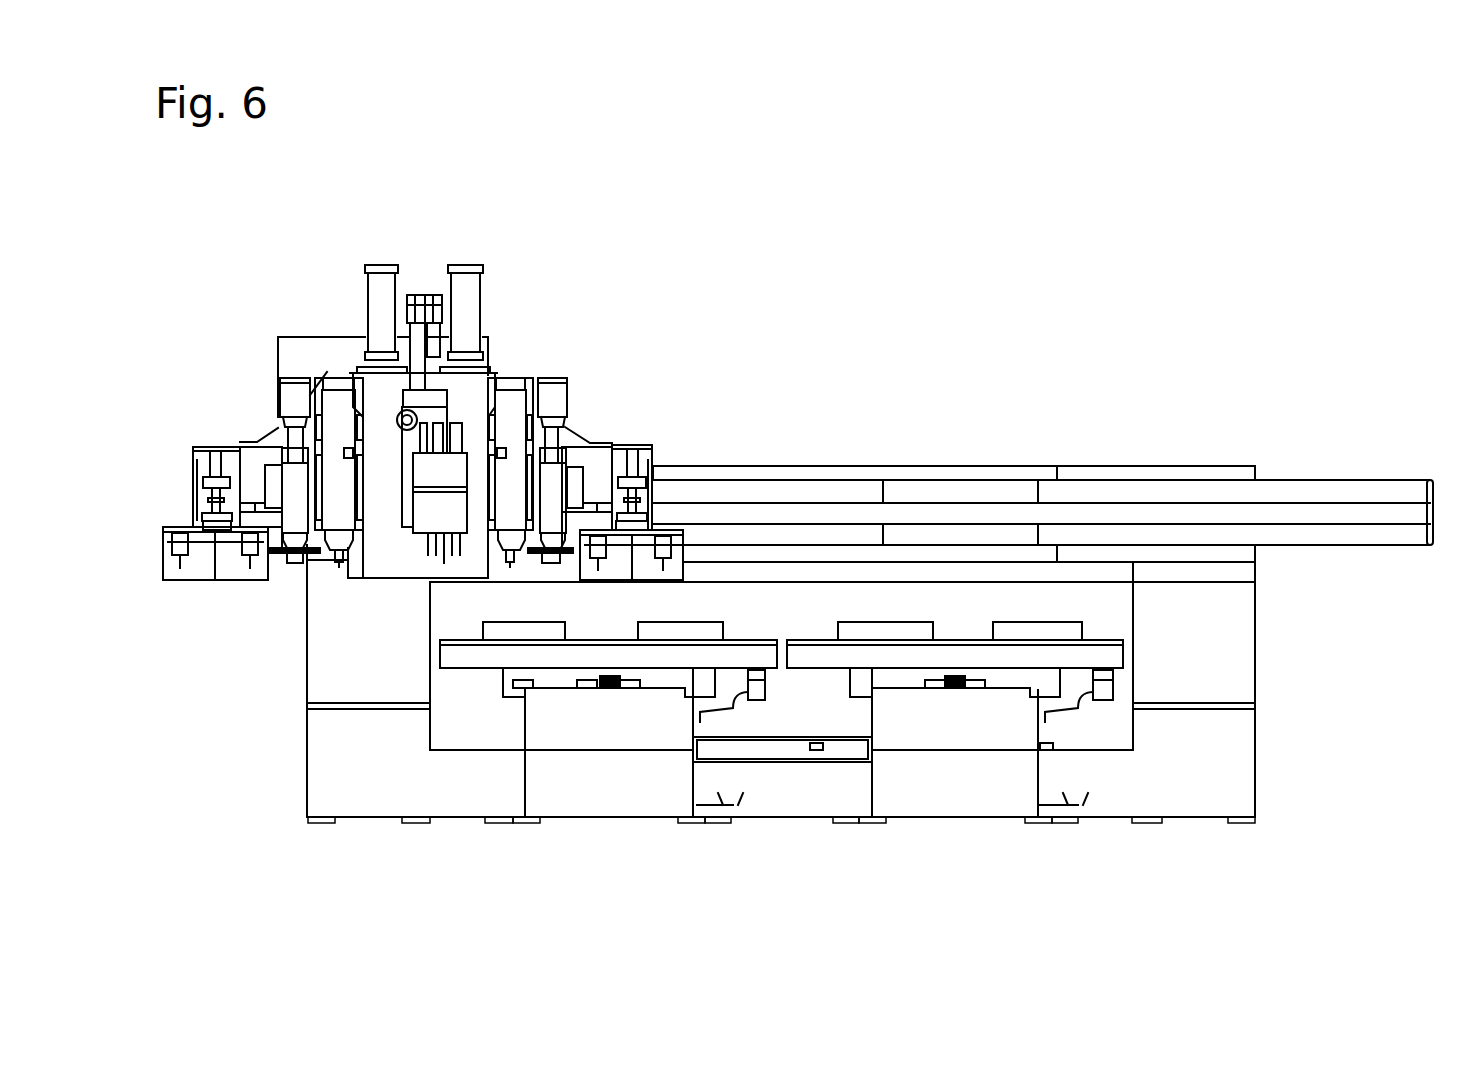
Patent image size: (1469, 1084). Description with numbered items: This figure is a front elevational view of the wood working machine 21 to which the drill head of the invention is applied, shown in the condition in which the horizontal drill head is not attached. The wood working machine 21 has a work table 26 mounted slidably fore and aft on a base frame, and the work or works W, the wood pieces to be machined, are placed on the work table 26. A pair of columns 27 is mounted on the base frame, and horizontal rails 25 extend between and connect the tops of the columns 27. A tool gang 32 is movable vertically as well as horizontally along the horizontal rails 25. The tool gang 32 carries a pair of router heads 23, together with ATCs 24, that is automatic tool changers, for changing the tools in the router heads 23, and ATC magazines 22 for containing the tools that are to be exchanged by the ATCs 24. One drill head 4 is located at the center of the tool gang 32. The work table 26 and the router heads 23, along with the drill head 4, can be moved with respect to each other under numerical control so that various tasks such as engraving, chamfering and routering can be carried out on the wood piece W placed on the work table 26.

The wood working machine 21 is at (855, 252).
The tool gang 32 is at (497, 231).
The router heads 23 is at (350, 373).
The ATCs (Automatic Tool Changers) 24 is at (293, 397).
The ATC magazines 22 is at (218, 443).
The drill head 4 is at (405, 461).
The horizontal rails 25 is at (1275, 490).
The work table 26 is at (833, 638).
The columns 27 is at (330, 688).
The work W is at (638, 632).